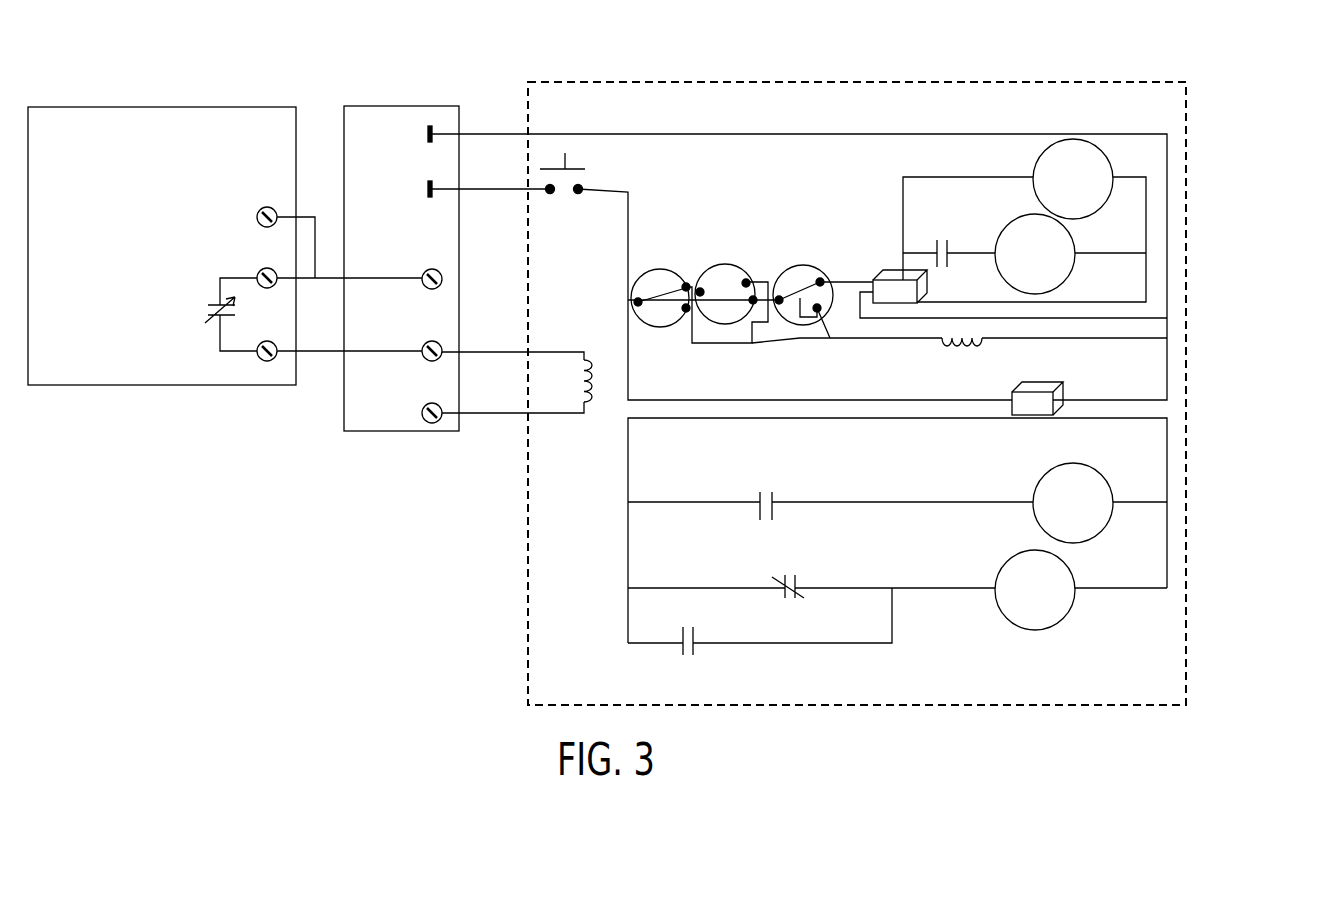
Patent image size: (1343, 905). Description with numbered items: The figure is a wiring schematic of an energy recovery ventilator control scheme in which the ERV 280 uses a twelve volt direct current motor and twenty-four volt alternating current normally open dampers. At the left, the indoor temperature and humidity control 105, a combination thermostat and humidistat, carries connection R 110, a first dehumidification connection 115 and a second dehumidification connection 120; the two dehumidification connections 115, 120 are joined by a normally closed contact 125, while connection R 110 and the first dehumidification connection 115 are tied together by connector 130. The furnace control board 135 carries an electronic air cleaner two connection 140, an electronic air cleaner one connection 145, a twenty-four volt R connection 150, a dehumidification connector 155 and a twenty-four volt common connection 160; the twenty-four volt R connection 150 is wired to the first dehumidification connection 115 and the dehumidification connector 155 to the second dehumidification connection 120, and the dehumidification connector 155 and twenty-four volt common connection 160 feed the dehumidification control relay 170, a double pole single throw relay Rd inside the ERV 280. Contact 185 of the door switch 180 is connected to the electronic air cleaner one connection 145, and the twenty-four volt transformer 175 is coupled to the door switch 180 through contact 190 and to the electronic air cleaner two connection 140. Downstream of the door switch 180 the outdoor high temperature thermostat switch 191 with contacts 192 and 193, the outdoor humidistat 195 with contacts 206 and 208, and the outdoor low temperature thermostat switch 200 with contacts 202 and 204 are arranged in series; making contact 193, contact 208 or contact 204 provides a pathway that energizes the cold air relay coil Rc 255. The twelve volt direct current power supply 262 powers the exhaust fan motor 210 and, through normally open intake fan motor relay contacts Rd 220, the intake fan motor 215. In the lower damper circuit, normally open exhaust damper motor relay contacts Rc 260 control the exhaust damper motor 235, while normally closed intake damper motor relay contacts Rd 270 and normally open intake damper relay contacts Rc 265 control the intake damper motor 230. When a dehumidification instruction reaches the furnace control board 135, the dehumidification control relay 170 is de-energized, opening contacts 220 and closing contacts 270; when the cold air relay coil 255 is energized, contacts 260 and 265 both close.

The indoor temperature and humidity control 105 is at (161, 107).
The connection R 110 is at (266, 207).
The connection D1 115 is at (258, 276).
The connection D2 120 is at (258, 356).
The contact 125 is at (213, 312).
The connector 130 is at (315, 215).
The furnace control board 135 is at (401, 106).
The EAC-2 connection 140 is at (425, 135).
The EAC-1 connection 145 is at (425, 189).
The 24V R connection 150 is at (422, 279).
The dehumidification connector 155 is at (422, 351).
The 24V C connection 160 is at (422, 413).
The dehumidification control relay 170 is at (592, 415).
The 24 v transformer 175 is at (1065, 392).
The door switch 180 is at (555, 230).
The contact of door switch 185 is at (547, 186).
The contact of door switch 190 is at (581, 187).
The outdoor high temperature thermostat switch 191 is at (660, 275).
The contact 192 is at (700, 289).
The contact 193 is at (686, 310).
The outdoor humidistat 195 is at (726, 278).
The outdoor low temperature thermostat switch 200 is at (807, 278).
The contact 202 is at (820, 280).
The contact 204 is at (817, 311).
The contact 206 is at (752, 304).
The contact 208 is at (747, 280).
The exhaust fan motor 210 is at (1113, 170).
The intake fan motor 215 is at (1075, 240).
The intake fan motor relay contacts Rd 220 is at (948, 244).
The intake damper motor 230 is at (1073, 568).
The exhaust damper motor 235 is at (1113, 488).
The cold air relay coil Rc 255 is at (942, 340).
The exhaust damper motor relay contacts Rc 260 is at (772, 500).
The 12 vdc power supply 262 is at (885, 270).
The intake damper relay contacts Rc 265 is at (693, 634).
The intake damper motor relay contacts Rd 270 is at (772, 577).
The energy recovery ventilator 280 is at (870, 80).